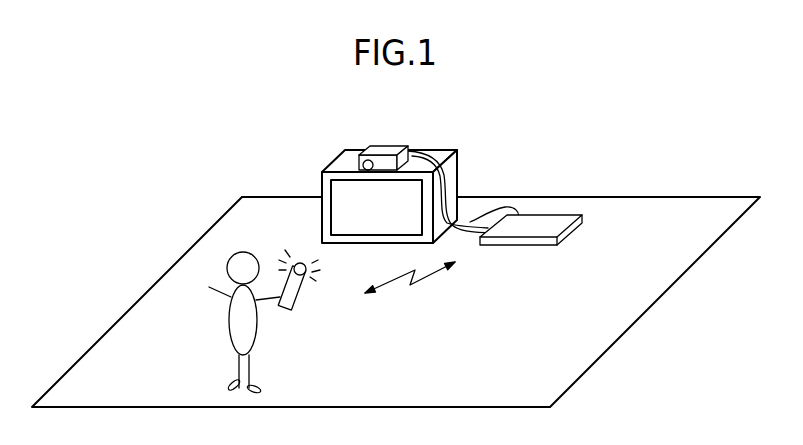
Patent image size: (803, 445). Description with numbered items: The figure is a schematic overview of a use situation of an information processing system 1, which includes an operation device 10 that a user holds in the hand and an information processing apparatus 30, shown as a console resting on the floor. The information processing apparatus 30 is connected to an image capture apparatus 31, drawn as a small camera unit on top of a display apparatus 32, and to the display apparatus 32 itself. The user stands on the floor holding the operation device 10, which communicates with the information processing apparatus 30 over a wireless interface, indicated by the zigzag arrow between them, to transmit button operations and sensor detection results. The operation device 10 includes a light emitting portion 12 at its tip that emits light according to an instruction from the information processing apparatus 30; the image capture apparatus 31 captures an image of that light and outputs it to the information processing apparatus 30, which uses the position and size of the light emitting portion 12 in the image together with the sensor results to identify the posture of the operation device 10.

The information processing system 1 is at (596, 187).
The operation device 10 is at (298, 301).
The light emitting portion 12 is at (299, 262).
The information processing apparatus 30 is at (535, 245).
The image capture apparatus 31 is at (388, 146).
The display apparatus 32 is at (321, 176).